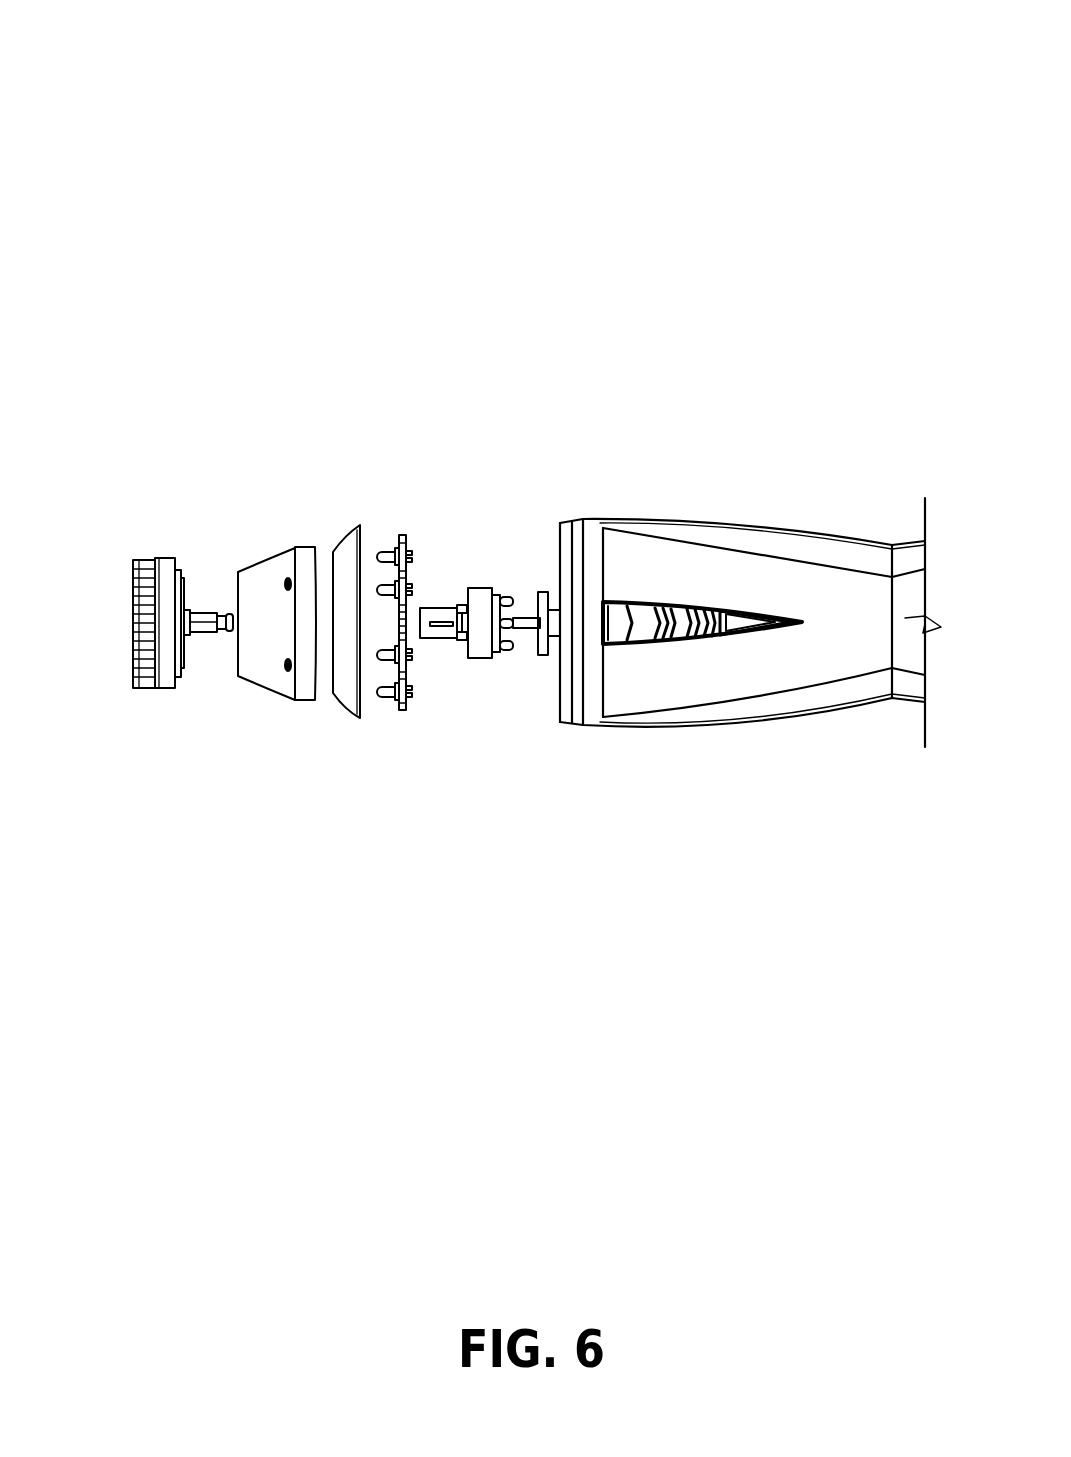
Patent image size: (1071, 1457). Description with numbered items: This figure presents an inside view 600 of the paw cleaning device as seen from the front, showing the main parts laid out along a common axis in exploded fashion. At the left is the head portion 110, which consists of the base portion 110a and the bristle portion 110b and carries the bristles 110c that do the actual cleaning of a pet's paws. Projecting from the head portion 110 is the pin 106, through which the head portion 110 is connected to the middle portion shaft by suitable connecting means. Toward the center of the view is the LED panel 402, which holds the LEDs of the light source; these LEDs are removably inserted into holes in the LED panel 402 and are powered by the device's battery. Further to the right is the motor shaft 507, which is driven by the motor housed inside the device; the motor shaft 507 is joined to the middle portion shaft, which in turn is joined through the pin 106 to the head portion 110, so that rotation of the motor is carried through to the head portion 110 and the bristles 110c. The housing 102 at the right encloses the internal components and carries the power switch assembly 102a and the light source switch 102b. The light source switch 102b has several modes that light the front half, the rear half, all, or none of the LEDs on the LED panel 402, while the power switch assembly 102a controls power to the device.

The inside view 600 is at (272, 118).
The head portion 110 is at (235, 536).
The base portion 110a is at (185, 652).
The bristle portion 110b is at (163, 678).
The bristles 110c is at (132, 662).
The pin 106 is at (217, 612).
The LED panel 402 is at (408, 625).
The motor shaft 507 is at (525, 615).
The housing 102 is at (835, 713).
The power switch assembly 102a is at (693, 630).
The light source switch 102b is at (623, 628).